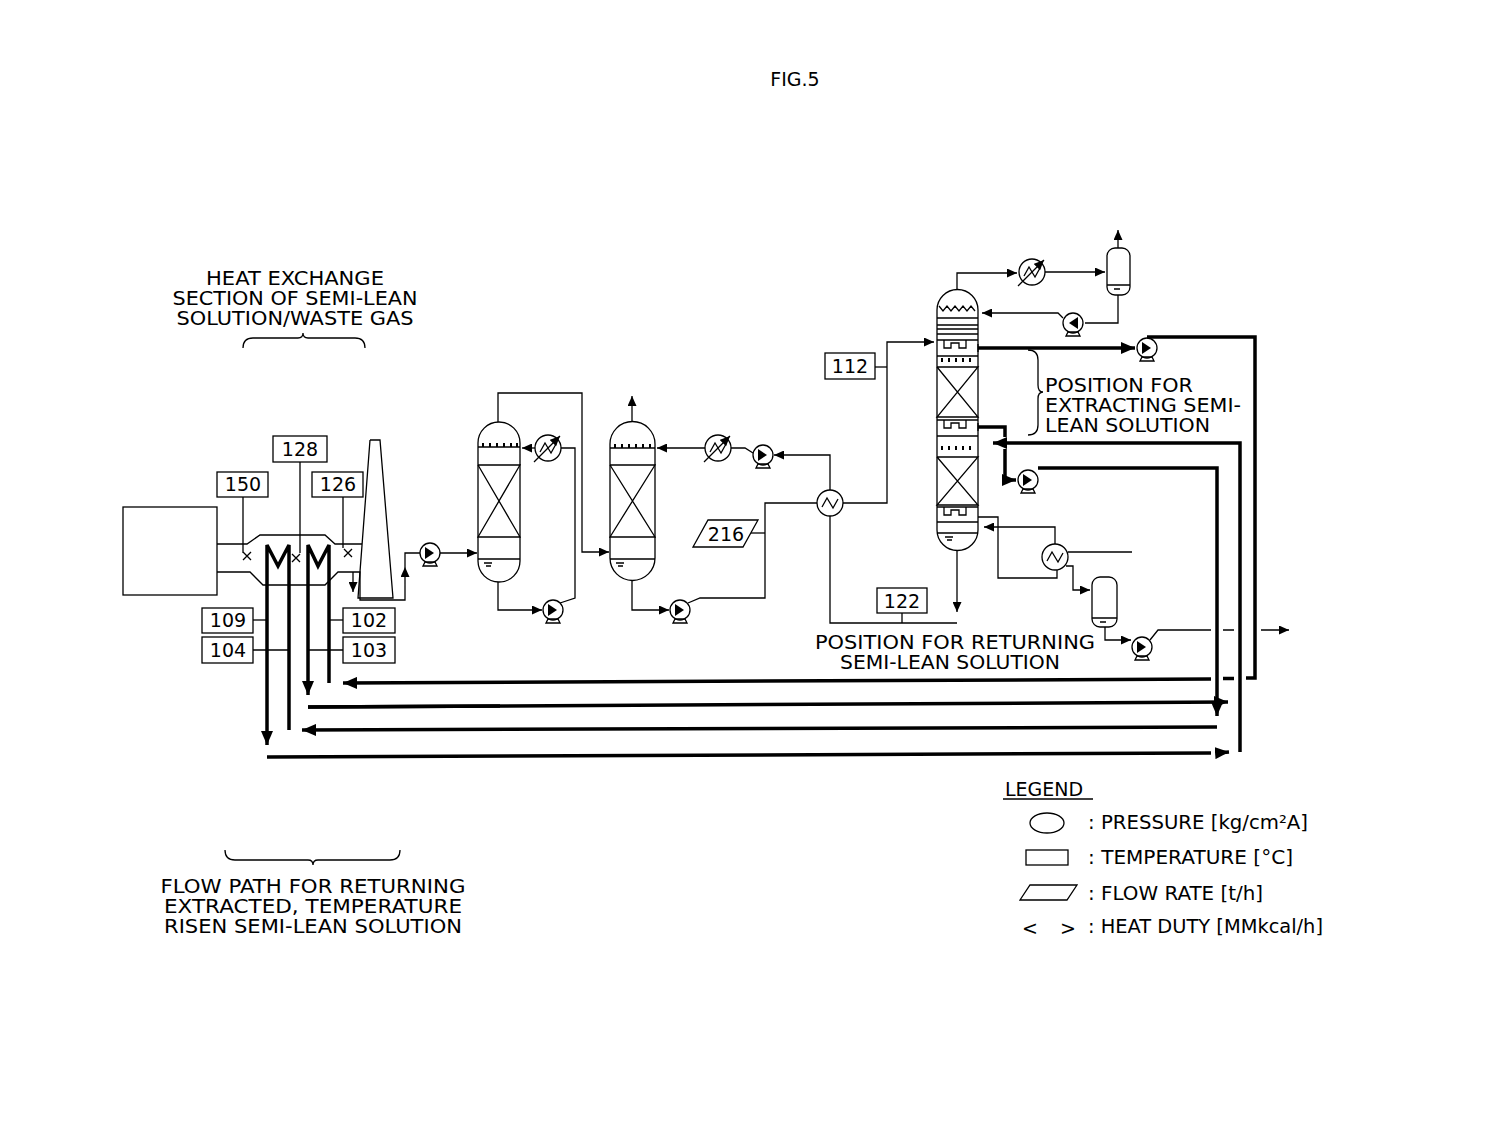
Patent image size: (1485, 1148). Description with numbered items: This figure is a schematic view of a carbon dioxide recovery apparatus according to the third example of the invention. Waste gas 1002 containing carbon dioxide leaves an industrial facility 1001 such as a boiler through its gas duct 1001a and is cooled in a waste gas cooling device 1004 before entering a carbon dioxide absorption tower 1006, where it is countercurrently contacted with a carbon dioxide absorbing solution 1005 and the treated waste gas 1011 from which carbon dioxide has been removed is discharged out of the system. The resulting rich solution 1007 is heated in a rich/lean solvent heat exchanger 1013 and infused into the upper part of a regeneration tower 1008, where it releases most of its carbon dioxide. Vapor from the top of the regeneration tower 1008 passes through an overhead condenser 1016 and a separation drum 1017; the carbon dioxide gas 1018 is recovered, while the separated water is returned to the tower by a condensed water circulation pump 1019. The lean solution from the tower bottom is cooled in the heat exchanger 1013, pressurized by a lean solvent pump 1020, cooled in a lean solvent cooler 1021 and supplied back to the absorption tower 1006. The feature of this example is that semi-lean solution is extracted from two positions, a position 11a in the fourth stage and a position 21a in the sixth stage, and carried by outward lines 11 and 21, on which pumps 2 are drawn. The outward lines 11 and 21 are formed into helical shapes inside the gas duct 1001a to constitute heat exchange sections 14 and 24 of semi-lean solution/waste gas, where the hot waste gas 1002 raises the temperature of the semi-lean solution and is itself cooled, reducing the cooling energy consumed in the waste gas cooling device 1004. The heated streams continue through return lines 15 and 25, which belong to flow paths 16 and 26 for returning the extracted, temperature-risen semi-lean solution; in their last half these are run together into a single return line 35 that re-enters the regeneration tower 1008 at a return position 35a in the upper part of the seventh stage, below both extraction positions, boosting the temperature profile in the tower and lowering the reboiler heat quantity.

The industrial facility 1001 is at (181, 507).
The gas duct 1001a is at (243, 575).
The waste gas 1002 is at (488, 333).
The waste gas cooling device 1004 is at (470, 432).
The CO2 absorbing solution 1005 is at (690, 446).
The CO2 absorption tower 1006 is at (640, 418).
The rich solution 1007 is at (900, 340).
The regeneration tower 1008 is at (945, 293).
The waste gas in which CO2 has been removed 1011 is at (618, 420).
The rich/lean solvents heat exchanger 1013 is at (838, 491).
The overhead condenser 1016 is at (1028, 258).
The separation drum 1017 is at (1131, 273).
The CO2 gas 1018 is at (1131, 221).
The condensed water circulation pump 1019 is at (1083, 323).
The lean solvent pump 1020 is at (773, 446).
The lean solvent cooler 1021 is at (690, 613).
The outward line 11 is at (1257, 360).
The position for extracting semi-lean solution 11a is at (978, 354).
The outward line 21 is at (1220, 538).
The position for extracting semi-lean solution 21a is at (982, 428).
The return line 35 is at (1242, 452).
The return position 35a is at (1005, 530).
The pump 2 is at (1158, 350).
The heat exchange section of semi-lean solution/waste gas 14 is at (306, 535).
The heat exchange section of semi-lean solution/waste gas 24 is at (273, 535).
The return line 15 is at (893, 709).
The return line 25 is at (623, 733).
The flow path for returning extracted, temperature risen semi-lean solution 16 is at (397, 712).
The flow path for returning extracted, temperature risen semi-lean solution 26 is at (292, 760).